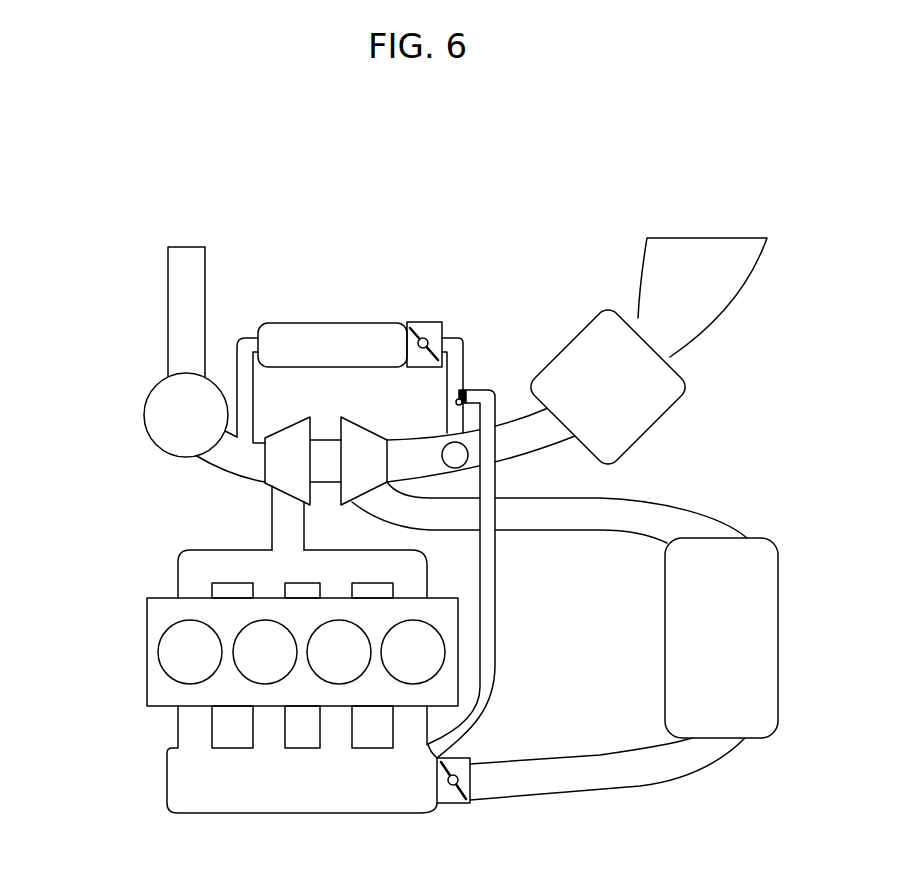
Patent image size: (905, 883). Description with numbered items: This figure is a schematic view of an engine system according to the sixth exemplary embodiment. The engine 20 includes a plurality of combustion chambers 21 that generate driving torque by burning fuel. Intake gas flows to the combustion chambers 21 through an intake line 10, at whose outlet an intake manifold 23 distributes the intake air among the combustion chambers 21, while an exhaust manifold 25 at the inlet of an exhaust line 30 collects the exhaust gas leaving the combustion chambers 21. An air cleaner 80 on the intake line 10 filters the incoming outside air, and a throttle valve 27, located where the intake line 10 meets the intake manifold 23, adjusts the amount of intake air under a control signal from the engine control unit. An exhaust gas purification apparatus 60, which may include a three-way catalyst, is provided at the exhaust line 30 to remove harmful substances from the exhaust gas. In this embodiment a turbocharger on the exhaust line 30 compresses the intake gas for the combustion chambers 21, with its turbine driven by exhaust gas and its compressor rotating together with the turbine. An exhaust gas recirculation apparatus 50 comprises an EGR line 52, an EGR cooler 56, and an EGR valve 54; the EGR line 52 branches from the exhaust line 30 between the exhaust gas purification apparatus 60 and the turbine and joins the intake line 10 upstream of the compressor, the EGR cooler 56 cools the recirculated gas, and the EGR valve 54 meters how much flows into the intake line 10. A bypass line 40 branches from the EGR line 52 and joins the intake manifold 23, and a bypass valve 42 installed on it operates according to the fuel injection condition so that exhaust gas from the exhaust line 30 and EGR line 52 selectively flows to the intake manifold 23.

The intake line 10 is at (570, 791).
The engine 20 is at (254, 709).
The combustion chamber 21 is at (158, 651).
The intake manifold 23 is at (300, 813).
The exhaust manifold 25 is at (177, 563).
The throttle valve 27 is at (457, 803).
The exhaust line 30 is at (168, 308).
The bypass line 40 is at (482, 389).
The bypass valve 42 is at (470, 388).
The exhaust gas recirculation apparatus 50 is at (445, 278).
The EGR line 52 is at (244, 336).
The EGR valve 54 is at (423, 322).
The EGR cooler 56 is at (335, 323).
The exhaust gas purification apparatus 60 is at (145, 413).
The air cleaner 80 is at (692, 387).